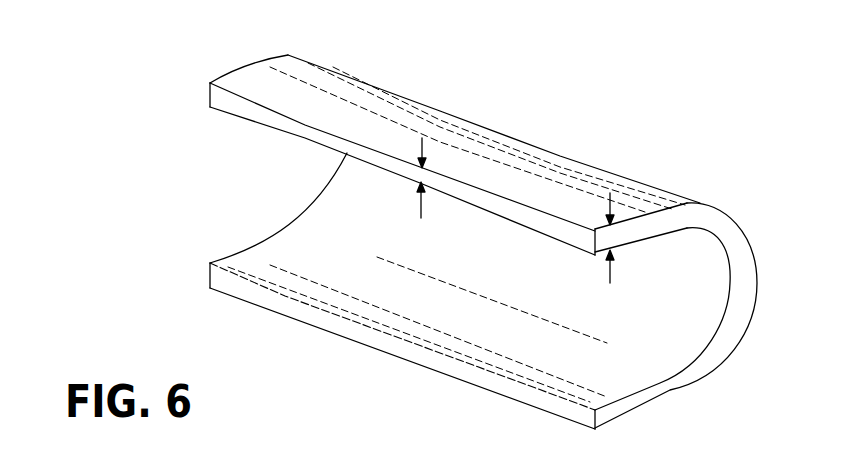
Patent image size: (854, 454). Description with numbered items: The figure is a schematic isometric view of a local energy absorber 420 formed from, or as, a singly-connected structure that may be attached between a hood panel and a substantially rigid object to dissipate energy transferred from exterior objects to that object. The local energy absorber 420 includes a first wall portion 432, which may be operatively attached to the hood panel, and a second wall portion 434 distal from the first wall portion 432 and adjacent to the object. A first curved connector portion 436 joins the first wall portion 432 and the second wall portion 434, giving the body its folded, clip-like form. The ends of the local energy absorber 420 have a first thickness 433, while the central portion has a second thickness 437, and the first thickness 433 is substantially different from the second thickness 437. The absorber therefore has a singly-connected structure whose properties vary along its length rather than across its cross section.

The local energy absorber 420 is at (168, 122).
The first wall portion 432 is at (322, 120).
The first thickness 433 is at (615, 202).
The second wall portion 434 is at (272, 302).
The first curved connector portion 436 is at (748, 275).
The second thickness 437 is at (422, 138).